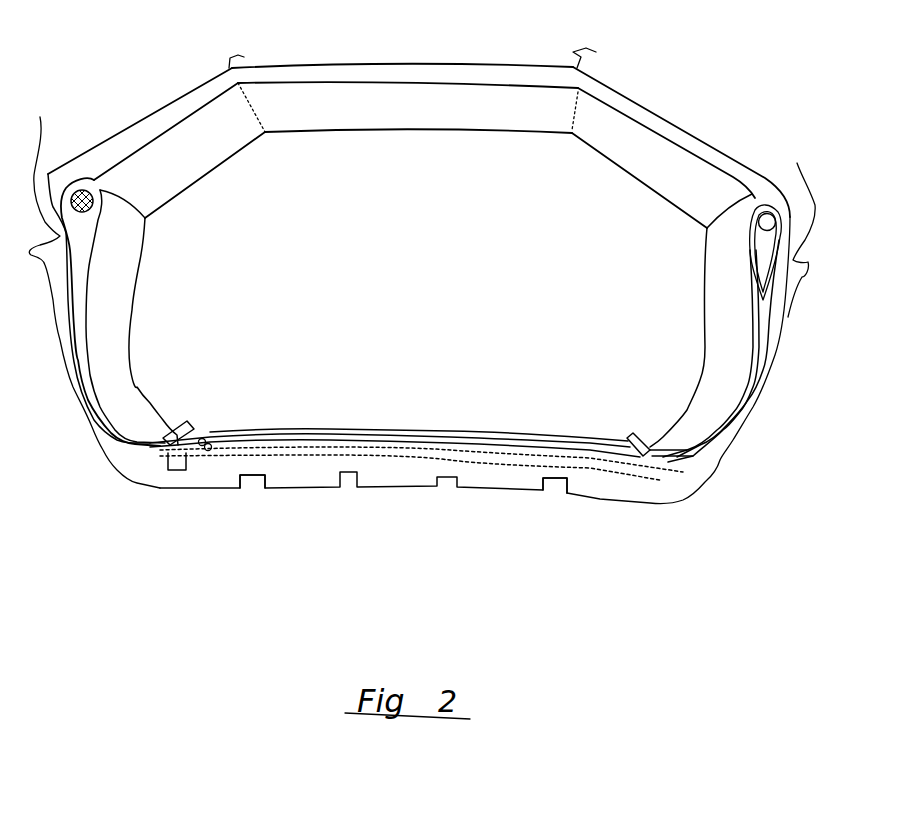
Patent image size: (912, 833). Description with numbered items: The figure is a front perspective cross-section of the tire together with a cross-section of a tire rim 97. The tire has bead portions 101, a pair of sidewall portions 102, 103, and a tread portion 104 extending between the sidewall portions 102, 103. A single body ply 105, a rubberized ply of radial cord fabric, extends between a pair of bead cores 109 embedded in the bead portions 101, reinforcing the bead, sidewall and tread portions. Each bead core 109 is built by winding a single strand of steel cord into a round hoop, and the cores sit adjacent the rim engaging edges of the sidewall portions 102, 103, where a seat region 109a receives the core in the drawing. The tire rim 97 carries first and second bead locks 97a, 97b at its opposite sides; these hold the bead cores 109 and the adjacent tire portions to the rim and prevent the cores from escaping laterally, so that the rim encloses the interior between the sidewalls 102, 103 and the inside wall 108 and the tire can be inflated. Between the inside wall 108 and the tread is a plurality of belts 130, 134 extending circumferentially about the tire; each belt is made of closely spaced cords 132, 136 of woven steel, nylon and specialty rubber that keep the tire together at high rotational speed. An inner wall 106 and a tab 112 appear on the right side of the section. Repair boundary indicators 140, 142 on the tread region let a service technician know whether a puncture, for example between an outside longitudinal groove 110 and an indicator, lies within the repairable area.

The tire rim 97 is at (487, 67).
The first bead lock 97a is at (87, 290).
The second bead lock 97b is at (696, 318).
The bead portion 101 is at (142, 234).
The sidewall portion 102 is at (92, 328).
The sidewall portion 103 is at (740, 320).
The tread portion 104 is at (325, 490).
The body ply 105 is at (75, 367).
The right side member 106 is at (747, 242).
The inside wall 108 is at (398, 430).
The bead core 109 is at (107, 178).
The pivot seat 109a is at (160, 200).
The outside longitudinal groove 110 is at (252, 489).
The mounting tab 112 is at (554, 492).
The belt 130 is at (118, 458).
The cord 132 is at (212, 437).
The belt 134 is at (139, 468).
The cord 136 is at (165, 473).
The repair boundary indicator 140 is at (183, 419).
The repair boundary indicator 142 is at (645, 435).